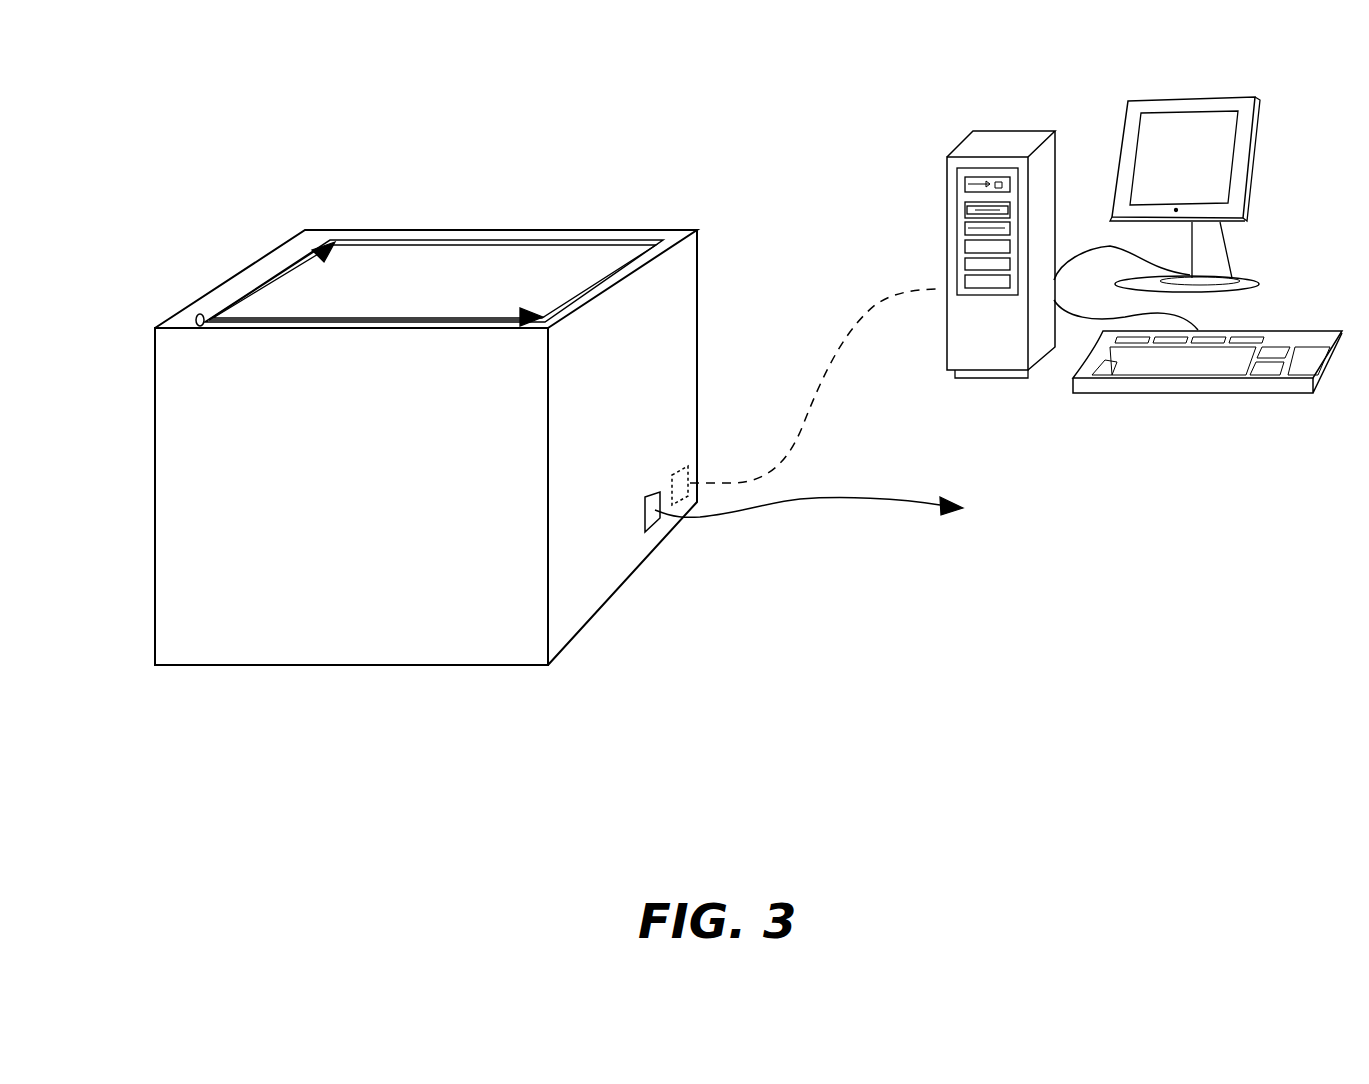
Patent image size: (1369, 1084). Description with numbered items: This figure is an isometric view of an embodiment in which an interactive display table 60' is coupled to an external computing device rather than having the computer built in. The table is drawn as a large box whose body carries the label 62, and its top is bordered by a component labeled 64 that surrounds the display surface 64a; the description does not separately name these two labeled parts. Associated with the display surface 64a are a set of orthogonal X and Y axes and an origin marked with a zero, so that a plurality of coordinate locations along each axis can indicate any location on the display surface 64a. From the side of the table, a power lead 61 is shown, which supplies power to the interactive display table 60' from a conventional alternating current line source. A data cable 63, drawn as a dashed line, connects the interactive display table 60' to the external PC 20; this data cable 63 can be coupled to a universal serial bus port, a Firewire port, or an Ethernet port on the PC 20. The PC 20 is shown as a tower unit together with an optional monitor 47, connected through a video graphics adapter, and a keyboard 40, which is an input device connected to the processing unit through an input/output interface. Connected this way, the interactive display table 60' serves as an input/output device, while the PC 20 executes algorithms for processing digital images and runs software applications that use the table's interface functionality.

The interactive display table 60' is at (460, 151).
The housing 62 is at (155, 450).
The sensor frame 64 is at (305, 250).
The display surface 64a is at (455, 289).
The power lead 61 is at (815, 500).
The data cable 63 is at (835, 378).
The PC 20 is at (1010, 130).
The monitor 47 is at (1258, 157).
The keyboard 40 is at (1295, 333).